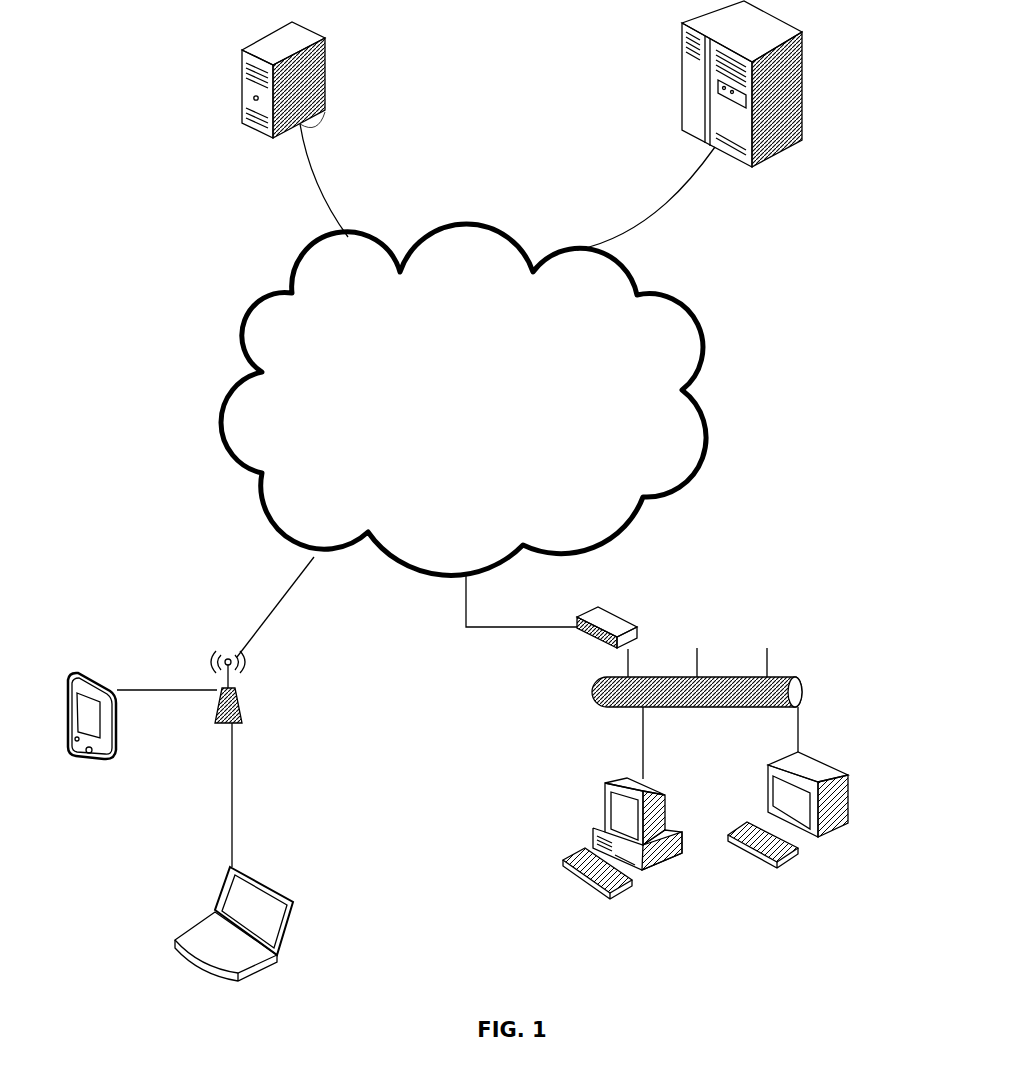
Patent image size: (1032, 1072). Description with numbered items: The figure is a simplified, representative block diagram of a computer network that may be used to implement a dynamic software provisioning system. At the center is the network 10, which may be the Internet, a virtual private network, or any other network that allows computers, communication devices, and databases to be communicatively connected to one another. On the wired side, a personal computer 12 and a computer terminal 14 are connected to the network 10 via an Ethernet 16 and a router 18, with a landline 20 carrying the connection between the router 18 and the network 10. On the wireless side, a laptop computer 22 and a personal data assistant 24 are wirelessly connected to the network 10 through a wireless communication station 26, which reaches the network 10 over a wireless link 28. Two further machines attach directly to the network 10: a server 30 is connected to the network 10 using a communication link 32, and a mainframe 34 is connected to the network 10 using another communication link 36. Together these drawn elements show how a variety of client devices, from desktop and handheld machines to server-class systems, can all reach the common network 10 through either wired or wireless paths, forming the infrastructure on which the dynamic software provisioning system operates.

The network 10 is at (186, 296).
The personal computer 12 is at (602, 818).
The computer terminal 14 is at (833, 765).
The Ethernet 16 is at (793, 677).
The router 18 is at (637, 628).
The landline 20 is at (503, 628).
The laptop computer 22 is at (253, 973).
The personal data assistant 24 is at (97, 680).
The wireless communication station 26 is at (242, 718).
The wireless link 28 is at (268, 615).
The server 30 is at (325, 78).
The communication link 32 is at (335, 213).
The mainframe 34 is at (757, 167).
The communication link 36 is at (685, 197).